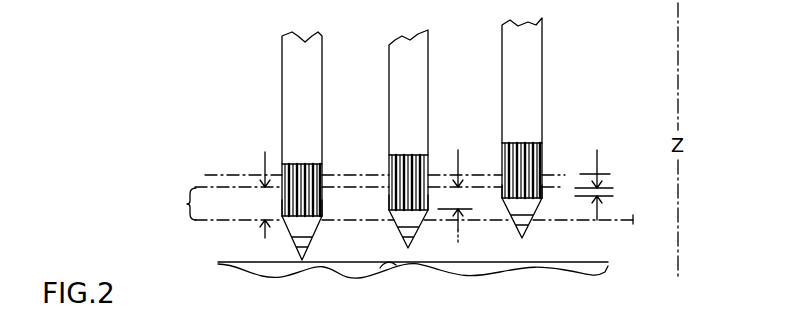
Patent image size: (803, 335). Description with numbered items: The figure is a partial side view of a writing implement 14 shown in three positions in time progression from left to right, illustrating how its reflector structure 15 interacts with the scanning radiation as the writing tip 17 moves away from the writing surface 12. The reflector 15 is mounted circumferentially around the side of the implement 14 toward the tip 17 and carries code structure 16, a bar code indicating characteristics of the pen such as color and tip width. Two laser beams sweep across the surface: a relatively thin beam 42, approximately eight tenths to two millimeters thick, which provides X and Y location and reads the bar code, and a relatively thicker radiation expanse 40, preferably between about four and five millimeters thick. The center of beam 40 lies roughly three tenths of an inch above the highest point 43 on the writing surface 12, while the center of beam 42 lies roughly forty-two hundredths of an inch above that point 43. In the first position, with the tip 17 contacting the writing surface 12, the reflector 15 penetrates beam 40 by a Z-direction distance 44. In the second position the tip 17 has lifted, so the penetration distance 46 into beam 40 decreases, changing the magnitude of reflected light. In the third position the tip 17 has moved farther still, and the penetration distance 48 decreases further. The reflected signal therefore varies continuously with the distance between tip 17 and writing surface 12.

The writing surface 12 is at (283, 262).
The writing implement 14 is at (282, 55).
The reflector structure 15 is at (323, 182).
The code structure 16 is at (311, 164).
The writing tip 17 is at (304, 260).
The radiation expanse 40 is at (205, 226).
The laser beam 42 is at (606, 167).
The highest point 43 is at (394, 266).
The penetration distance 44 is at (260, 206).
The penetration distance 46 is at (465, 199).
The penetration distance 48 is at (609, 193).